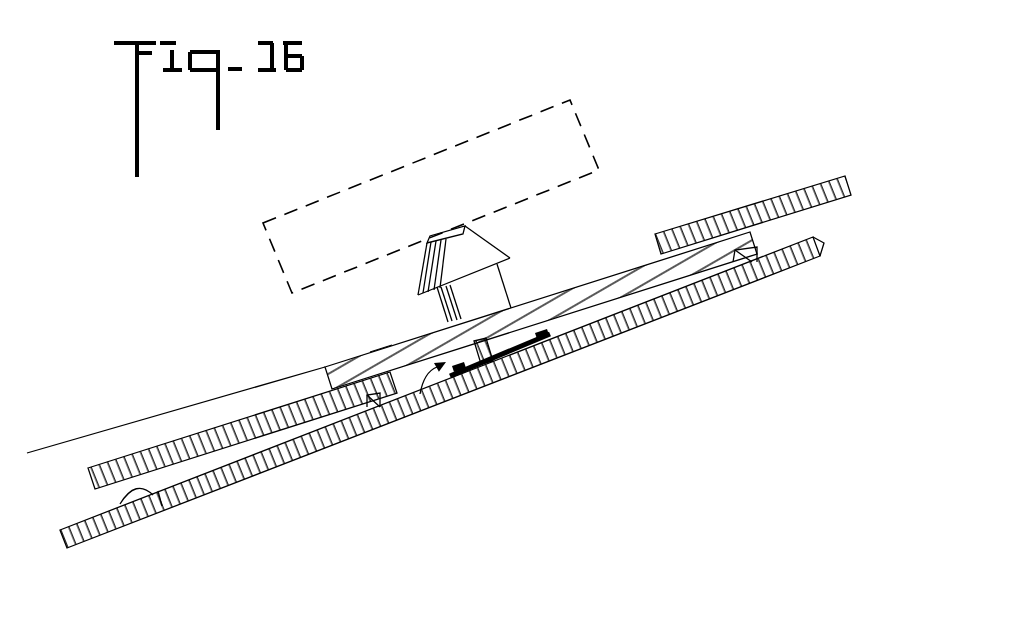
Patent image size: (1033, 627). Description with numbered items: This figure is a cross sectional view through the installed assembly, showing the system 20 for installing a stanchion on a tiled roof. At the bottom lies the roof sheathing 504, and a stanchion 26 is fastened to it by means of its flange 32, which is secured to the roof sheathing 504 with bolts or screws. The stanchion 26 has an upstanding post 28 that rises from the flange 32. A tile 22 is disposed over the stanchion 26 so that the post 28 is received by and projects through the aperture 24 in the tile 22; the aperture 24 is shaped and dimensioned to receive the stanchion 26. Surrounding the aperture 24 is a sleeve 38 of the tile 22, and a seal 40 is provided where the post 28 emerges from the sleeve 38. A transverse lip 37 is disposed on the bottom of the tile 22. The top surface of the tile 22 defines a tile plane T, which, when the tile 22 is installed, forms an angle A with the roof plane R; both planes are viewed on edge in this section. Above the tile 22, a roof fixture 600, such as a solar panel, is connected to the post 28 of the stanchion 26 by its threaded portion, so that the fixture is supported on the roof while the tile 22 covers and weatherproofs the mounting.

The roof fixture 600 is at (579, 77).
The system 20 is at (634, 203).
The tile 22 is at (562, 292).
The aperture 24 is at (508, 312).
The stanchion 26 is at (418, 392).
The post 28 is at (421, 253).
The flange 32 is at (525, 343).
The transverse lip 37 is at (755, 262).
The sleeve 38 is at (440, 313).
The seal 40 is at (488, 250).
The roof sheathing 504 is at (310, 452).
The tile plane T is at (381, 349).
The angle A is at (37, 460).
The roof plane R is at (167, 497).